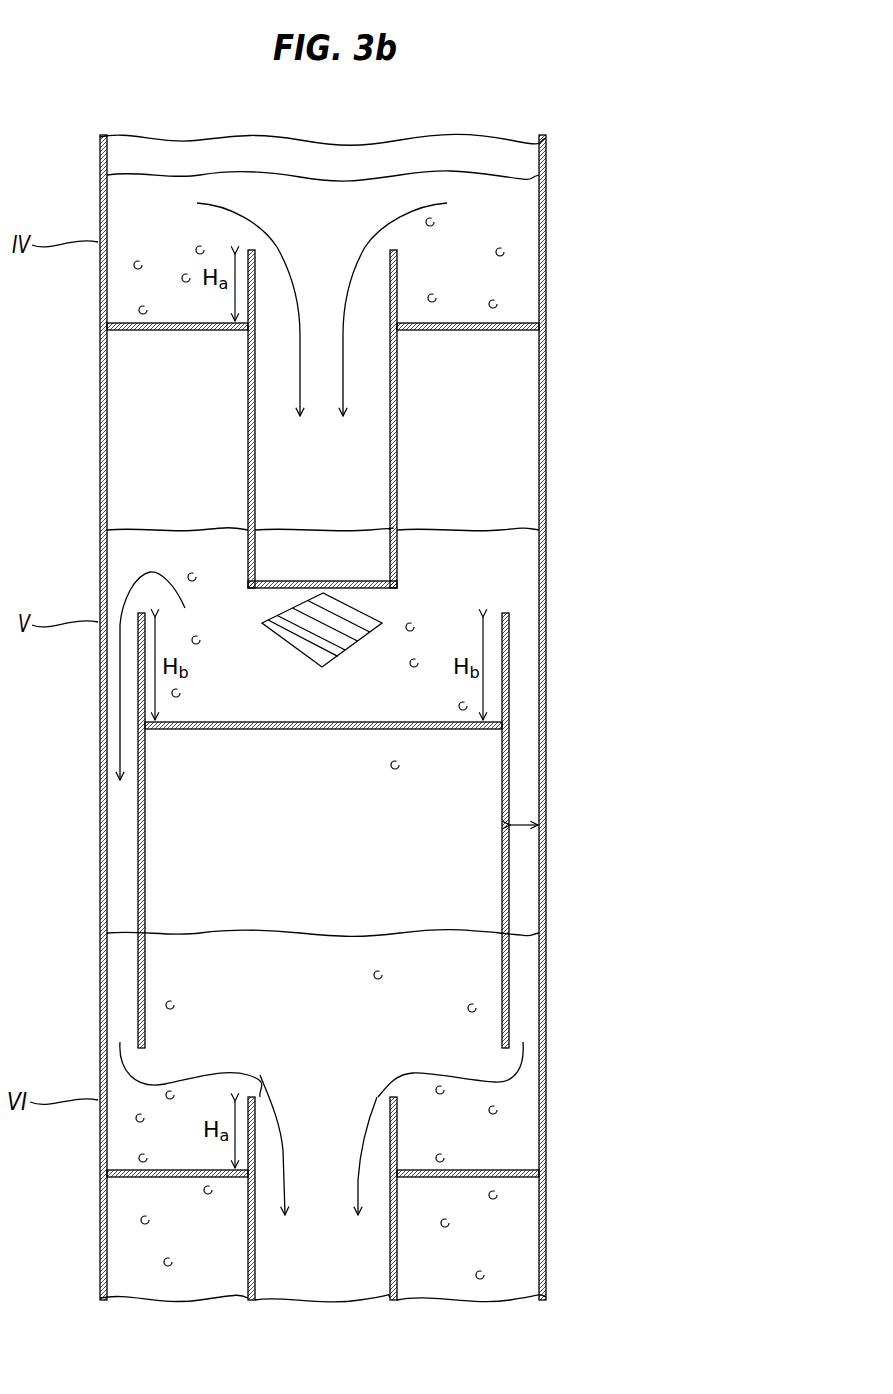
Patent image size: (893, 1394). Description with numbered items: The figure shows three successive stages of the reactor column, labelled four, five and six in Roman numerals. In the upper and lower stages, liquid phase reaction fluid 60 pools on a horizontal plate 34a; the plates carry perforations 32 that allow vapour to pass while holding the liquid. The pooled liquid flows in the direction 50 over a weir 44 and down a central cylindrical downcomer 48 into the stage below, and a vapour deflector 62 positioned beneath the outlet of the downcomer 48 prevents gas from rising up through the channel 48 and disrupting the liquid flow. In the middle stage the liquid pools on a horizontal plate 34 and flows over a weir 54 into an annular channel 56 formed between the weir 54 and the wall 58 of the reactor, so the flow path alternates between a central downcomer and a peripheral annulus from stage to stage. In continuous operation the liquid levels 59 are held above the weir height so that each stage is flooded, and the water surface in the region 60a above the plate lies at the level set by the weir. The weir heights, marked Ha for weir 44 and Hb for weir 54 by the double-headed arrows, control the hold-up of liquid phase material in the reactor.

The perforations 32 is at (505, 323).
The horizontal plate 34 is at (158, 729).
The horizontal plate 34a is at (162, 330).
The weir 44 is at (251, 250).
The cylindrical downcomer 48 is at (323, 285).
The flow direction 50 is at (392, 217).
The weir 54 is at (140, 668).
The annular channel 56 is at (118, 840).
The wall 58 is at (98, 752).
The liquid levels 59 is at (170, 177).
The liquid phase reaction fluid 60 is at (375, 175).
The liquid level 60a is at (468, 530).
The vapour deflector 62 is at (338, 605).